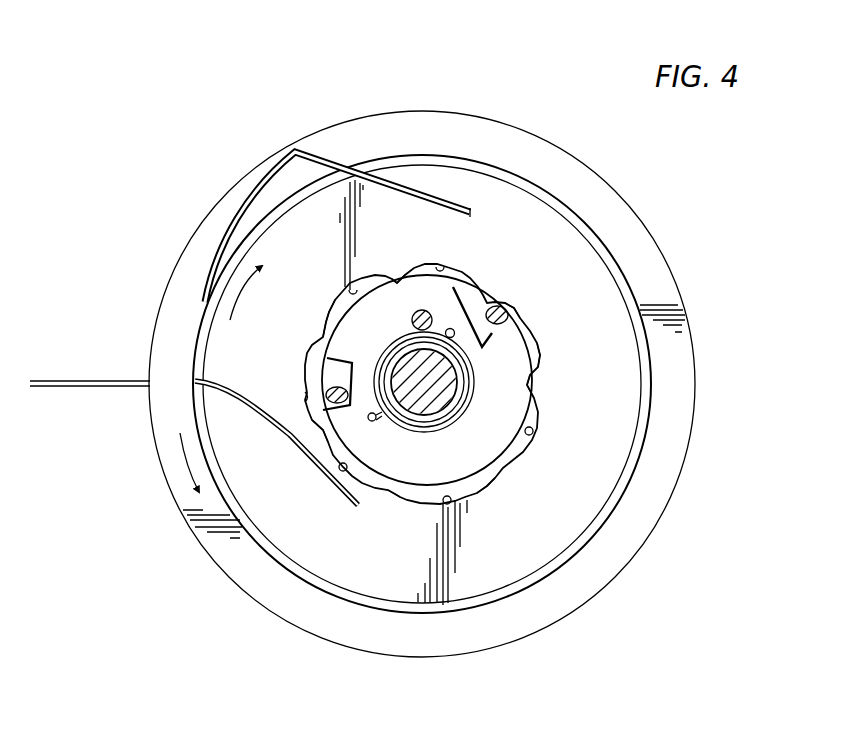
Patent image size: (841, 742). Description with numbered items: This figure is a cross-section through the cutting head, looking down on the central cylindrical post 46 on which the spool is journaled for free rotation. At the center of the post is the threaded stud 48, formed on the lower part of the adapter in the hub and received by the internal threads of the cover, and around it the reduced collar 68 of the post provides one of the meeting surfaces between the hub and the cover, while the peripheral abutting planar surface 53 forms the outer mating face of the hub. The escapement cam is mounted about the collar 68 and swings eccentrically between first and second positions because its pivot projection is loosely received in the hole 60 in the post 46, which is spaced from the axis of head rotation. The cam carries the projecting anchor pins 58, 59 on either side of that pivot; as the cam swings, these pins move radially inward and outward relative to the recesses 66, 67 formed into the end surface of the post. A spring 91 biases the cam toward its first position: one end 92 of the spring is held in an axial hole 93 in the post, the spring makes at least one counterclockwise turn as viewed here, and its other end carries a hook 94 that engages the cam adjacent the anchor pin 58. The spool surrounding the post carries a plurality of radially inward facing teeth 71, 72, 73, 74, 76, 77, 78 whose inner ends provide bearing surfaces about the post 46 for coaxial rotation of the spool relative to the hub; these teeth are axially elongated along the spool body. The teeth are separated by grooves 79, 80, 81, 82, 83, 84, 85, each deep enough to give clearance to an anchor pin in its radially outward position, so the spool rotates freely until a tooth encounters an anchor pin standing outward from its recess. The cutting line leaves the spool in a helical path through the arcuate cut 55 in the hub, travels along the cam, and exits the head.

The cylindrical post 46 is at (512, 408).
The threaded stud 48 is at (440, 397).
The peripheral abutting planar surface 53 is at (407, 327).
The arcuate cut 55 is at (270, 188).
The anchor pin 58 is at (326, 388).
The anchor pin 59 is at (506, 311).
The hole 60 is at (413, 318).
The recess 66 is at (320, 367).
The recess 67 is at (540, 352).
The reduced collar 68 is at (427, 423).
The tooth 71 is at (487, 297).
The tooth 72 is at (397, 282).
The tooth 73 is at (326, 336).
The tooth 74 is at (327, 428).
The tooth 76 is at (400, 494).
The tooth 77 is at (493, 471).
The tooth 78 is at (530, 383).
The groove 79 is at (443, 268).
The groove 80 is at (353, 288).
The groove 81 is at (305, 398).
The groove 82 is at (350, 478).
The groove 83 is at (456, 501).
The groove 84 is at (530, 434).
The groove 85 is at (524, 325).
The spring 91 is at (470, 388).
The spring end 92 is at (447, 328).
The axial hole 93 is at (448, 328).
The hook 94 is at (373, 421).